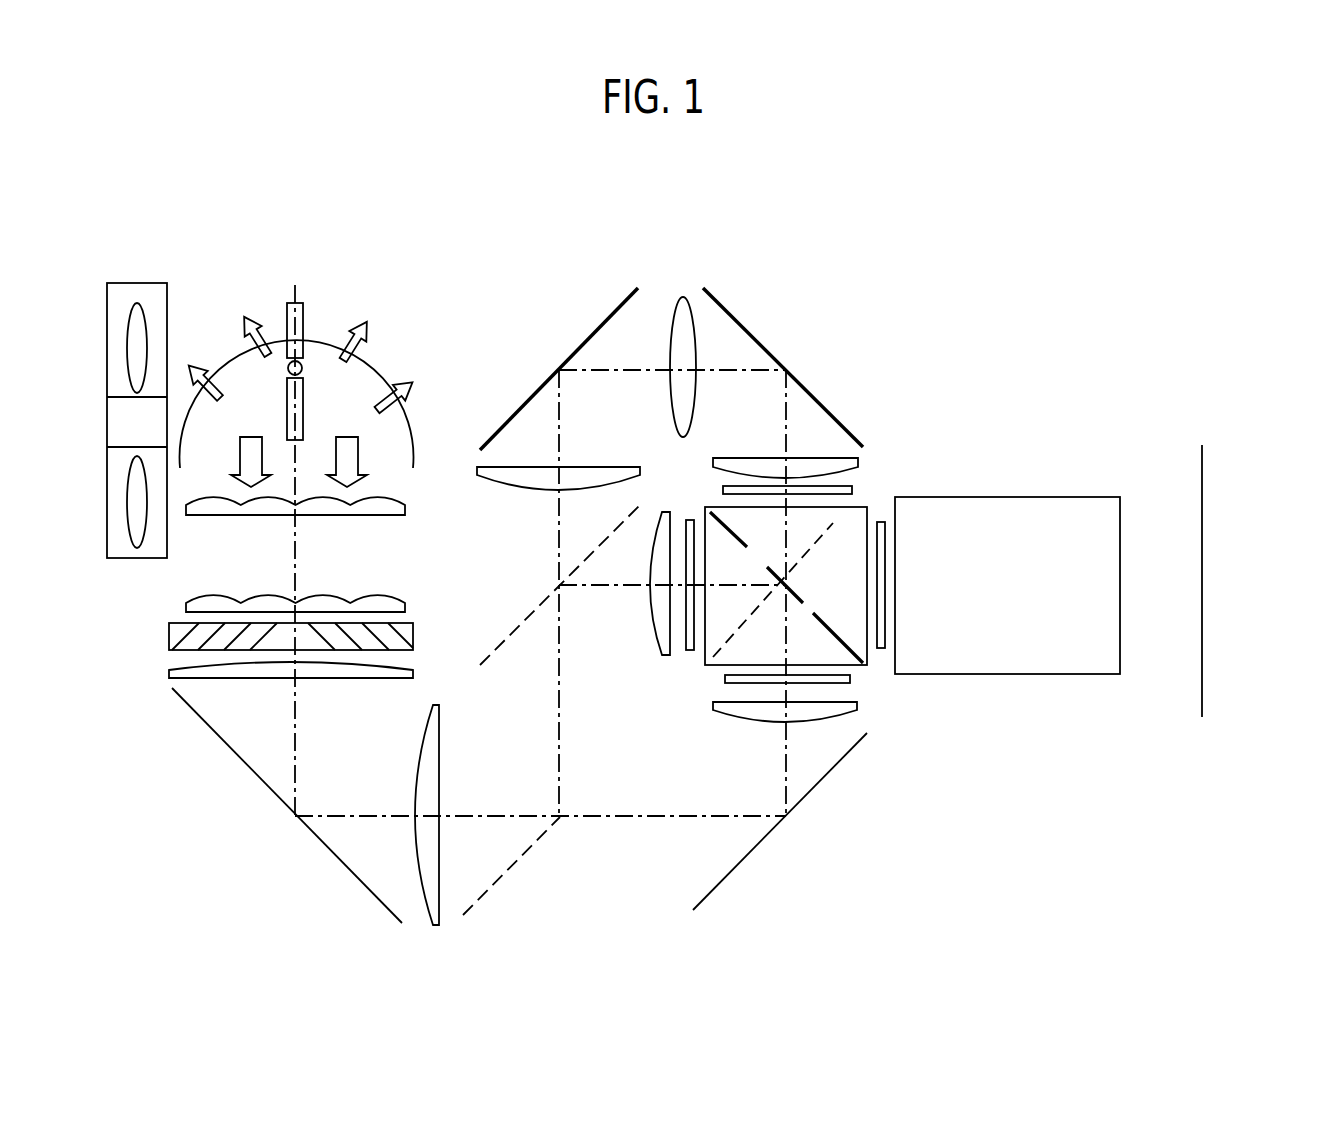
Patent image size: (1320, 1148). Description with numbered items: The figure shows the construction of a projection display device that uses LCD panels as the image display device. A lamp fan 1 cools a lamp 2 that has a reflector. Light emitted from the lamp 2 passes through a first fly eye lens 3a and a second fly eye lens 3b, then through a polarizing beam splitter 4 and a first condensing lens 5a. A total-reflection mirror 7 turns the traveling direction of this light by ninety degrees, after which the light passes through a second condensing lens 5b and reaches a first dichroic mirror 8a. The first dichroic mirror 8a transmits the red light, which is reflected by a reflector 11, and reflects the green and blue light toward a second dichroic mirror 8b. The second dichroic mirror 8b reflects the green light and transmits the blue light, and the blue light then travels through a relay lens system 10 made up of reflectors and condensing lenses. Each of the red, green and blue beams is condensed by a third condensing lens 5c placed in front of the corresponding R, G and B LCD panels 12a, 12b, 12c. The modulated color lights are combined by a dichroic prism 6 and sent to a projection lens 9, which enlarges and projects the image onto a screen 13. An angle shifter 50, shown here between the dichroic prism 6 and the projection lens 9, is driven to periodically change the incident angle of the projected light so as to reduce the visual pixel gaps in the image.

The lamp fan 1 is at (140, 292).
The lamp 2 is at (375, 363).
The first fly eye lens 3a is at (392, 505).
The second fly eye lens 3b is at (392, 603).
The polarizing beam splitter 4 is at (407, 635).
The first condensing lens 5a is at (342, 670).
The second condensing lens 5b is at (432, 778).
The third condensing lens 5c is at (667, 515).
The dichroic prism 6 is at (833, 523).
The total-reflection mirror 7 is at (340, 863).
The first dichroic mirror 8a is at (488, 888).
The second dichroic mirror 8b is at (507, 640).
The projection lens 9 is at (1004, 664).
The relay lens system 10 is at (872, 264).
The reflector 11 is at (823, 778).
The R LCD panel 12a is at (725, 678).
The G LCD panel 12b is at (690, 525).
The B LCD panel 12c is at (805, 492).
The screen 13 is at (1202, 611).
The angle shifter 50 is at (880, 632).